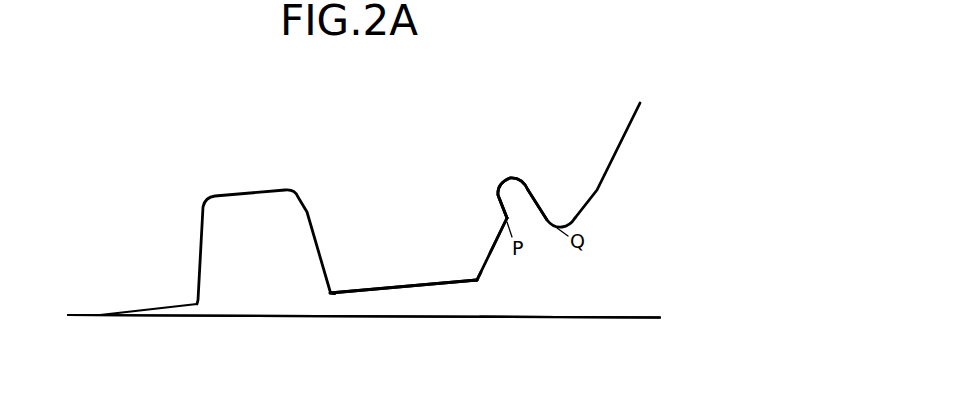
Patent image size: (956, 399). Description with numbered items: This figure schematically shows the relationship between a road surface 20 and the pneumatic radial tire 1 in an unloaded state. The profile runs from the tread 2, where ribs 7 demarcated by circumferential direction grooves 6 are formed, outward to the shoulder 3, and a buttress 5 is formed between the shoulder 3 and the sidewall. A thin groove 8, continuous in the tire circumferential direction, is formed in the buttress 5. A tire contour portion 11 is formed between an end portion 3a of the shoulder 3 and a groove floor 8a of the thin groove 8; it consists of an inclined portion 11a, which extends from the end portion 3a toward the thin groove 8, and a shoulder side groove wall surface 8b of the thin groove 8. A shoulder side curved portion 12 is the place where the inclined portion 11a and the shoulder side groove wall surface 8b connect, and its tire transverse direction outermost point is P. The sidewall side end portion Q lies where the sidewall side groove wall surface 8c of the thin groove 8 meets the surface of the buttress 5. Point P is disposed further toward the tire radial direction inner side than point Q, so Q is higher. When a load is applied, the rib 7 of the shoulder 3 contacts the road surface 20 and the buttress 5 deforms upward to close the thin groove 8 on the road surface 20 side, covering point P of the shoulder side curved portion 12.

The pneumatic radial tire 1 is at (124, 130).
The tread 2 is at (193, 309).
The shoulder 3 is at (427, 290).
The end portion of the shoulder 3a is at (477, 287).
The buttress 5 is at (628, 140).
The circumferential direction grooves 6 is at (244, 203).
The ribs 7 is at (125, 295).
The thin groove 8 is at (518, 205).
The groove floor 8a is at (505, 183).
The shoulder side groove wall surface 8b is at (497, 205).
The sidewall side groove wall surface 8c is at (536, 192).
The tire contour portion 11 is at (495, 263).
The inclined portion 11a is at (495, 250).
The shoulder side curved portion 12 is at (495, 221).
The road surface 20 is at (614, 319).